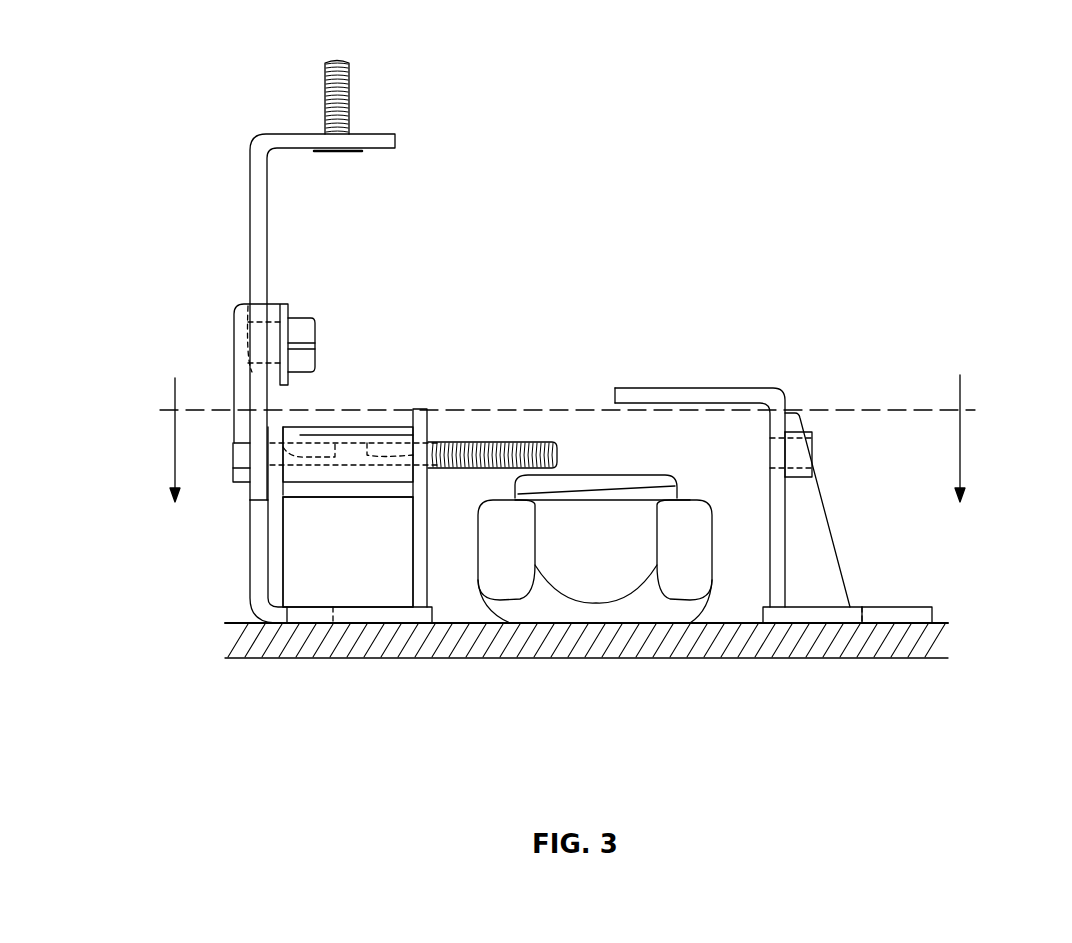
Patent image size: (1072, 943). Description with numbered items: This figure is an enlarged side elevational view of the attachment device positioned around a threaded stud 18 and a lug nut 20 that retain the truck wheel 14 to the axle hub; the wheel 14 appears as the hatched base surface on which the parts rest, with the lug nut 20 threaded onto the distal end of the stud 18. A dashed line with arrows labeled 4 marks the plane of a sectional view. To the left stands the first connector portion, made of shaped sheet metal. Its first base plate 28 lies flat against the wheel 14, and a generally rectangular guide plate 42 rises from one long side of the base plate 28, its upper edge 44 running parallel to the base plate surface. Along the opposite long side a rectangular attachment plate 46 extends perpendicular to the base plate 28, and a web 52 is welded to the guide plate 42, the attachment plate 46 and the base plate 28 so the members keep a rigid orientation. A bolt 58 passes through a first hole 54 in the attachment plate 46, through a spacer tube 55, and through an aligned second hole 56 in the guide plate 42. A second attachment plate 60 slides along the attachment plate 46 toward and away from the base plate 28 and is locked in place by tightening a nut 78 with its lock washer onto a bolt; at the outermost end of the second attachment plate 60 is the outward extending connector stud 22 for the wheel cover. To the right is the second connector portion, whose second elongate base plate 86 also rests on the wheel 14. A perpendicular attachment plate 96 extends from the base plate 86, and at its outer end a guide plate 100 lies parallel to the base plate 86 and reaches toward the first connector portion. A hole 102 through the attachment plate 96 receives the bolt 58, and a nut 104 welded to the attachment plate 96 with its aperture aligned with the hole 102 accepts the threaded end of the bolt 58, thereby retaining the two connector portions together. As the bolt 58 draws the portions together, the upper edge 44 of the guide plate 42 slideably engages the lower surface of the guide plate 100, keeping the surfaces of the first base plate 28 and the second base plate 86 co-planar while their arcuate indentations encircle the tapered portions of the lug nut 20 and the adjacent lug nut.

The section line 4- 4 is at (567, 465).
The truck wheel 14 is at (955, 642).
The threaded stud 18 is at (610, 470).
The lug nut 20 is at (708, 608).
The connector stud 22 is at (353, 93).
The first base plate 28 is at (360, 615).
The guide plate 42 is at (428, 568).
The upper edge 44 is at (425, 397).
The attachment plate 46 is at (268, 532).
The web 52 is at (298, 567).
The first hole 54 is at (335, 453).
The spacer tube 55 is at (383, 433).
The second hole 56 is at (367, 453).
The bolt 58 is at (508, 432).
The second attachment plate 60 is at (247, 207).
The nut 78 is at (302, 327).
The second elongate base plate 86 is at (912, 598).
The attachment plate 96 is at (783, 543).
The guide plate 100 is at (712, 387).
The hole 102 is at (782, 443).
The nut 104 is at (818, 432).